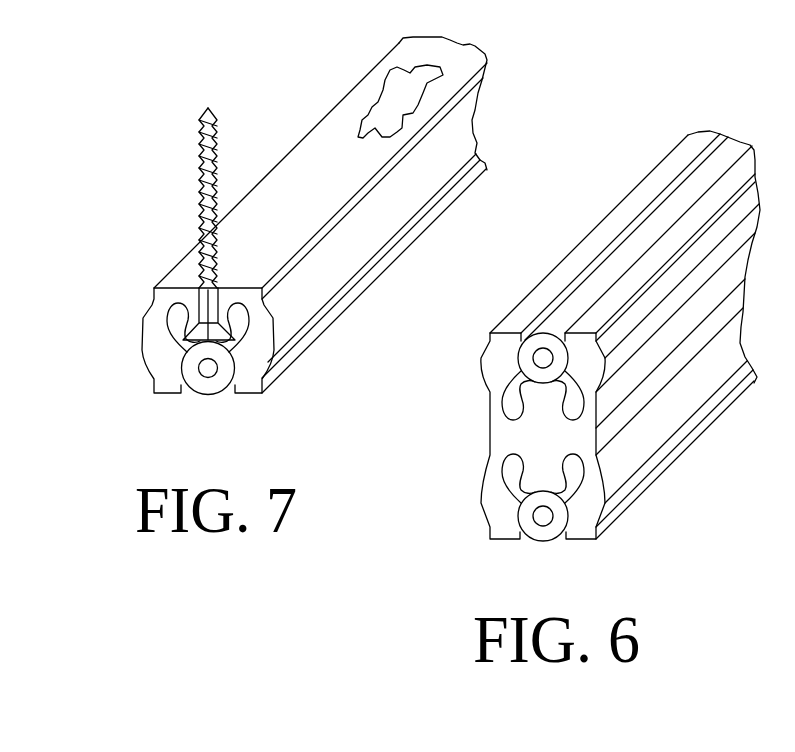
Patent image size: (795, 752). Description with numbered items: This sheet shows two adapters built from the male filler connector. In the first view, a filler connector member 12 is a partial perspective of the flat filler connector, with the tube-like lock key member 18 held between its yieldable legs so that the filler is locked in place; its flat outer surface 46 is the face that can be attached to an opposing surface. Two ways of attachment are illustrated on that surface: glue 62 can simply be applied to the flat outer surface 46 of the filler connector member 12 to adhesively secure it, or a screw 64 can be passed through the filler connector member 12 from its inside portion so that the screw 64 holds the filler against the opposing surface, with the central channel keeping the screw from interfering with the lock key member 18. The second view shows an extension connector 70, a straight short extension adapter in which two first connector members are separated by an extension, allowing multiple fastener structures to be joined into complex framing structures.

In FIG. 7, the first connector member 12 is at (253, 300).
In FIG. 7, the lock key member 18 is at (210, 390).
In FIG. 7, the flat outer surface 46 is at (317, 167).
In FIG. 7, the glue 62 is at (385, 98).
In FIG. 7, the screw 64 is at (202, 210).
In FIG. 6, the extension connector 70 is at (580, 438).